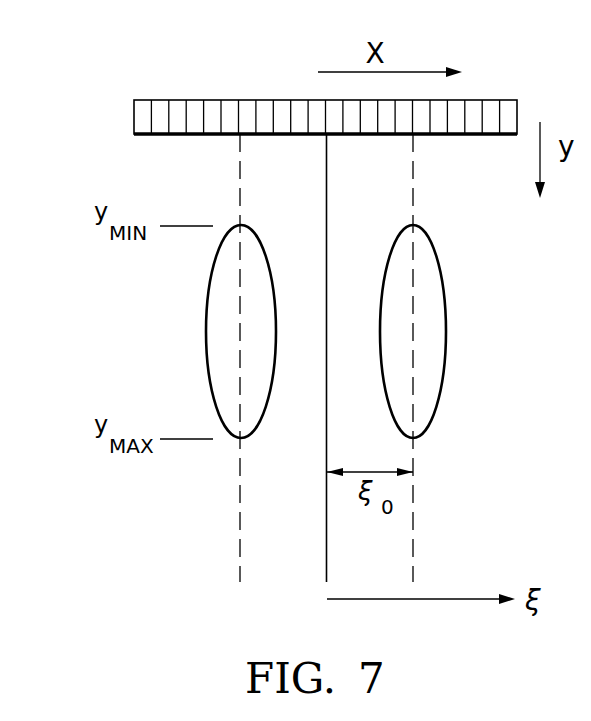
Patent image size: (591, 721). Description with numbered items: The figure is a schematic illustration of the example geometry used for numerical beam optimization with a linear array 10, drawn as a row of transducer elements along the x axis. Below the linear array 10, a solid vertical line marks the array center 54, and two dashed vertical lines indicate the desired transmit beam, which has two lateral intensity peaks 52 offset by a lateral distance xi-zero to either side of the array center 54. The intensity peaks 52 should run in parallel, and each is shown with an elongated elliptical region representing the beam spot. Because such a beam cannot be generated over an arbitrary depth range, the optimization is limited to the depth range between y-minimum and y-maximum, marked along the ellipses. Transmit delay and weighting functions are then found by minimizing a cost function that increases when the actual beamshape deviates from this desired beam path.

The linear array 10 is at (140, 94).
The lateral intensity peaks 52 is at (242, 532).
The array center 54 is at (326, 553).